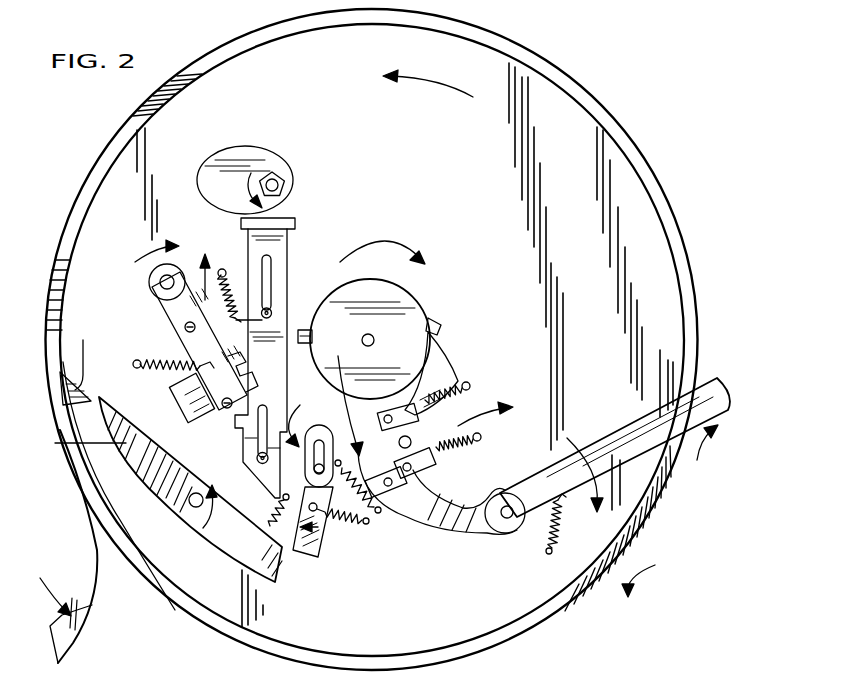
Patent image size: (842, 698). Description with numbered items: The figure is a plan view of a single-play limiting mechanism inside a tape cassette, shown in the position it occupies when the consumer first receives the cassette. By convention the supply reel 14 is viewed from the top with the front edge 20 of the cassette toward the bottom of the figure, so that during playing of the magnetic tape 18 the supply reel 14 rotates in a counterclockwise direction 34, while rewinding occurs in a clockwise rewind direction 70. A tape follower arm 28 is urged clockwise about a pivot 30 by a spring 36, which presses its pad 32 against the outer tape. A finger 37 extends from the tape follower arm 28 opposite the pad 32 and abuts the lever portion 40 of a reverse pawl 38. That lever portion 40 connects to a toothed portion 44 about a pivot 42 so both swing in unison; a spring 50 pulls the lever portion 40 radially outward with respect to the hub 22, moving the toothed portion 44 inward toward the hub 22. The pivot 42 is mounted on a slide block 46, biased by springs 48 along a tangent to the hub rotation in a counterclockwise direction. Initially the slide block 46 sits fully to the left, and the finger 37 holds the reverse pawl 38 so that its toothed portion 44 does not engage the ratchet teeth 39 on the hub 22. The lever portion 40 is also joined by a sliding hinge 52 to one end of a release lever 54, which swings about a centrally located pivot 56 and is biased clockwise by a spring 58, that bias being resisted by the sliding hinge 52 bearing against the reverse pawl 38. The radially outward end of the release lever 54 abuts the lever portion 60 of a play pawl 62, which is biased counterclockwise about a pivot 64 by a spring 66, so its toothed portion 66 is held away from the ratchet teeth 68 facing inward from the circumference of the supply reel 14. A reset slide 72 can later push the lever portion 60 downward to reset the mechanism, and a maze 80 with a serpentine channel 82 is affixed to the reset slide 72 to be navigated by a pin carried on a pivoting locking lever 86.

The supply reel 14 is at (568, 78).
The magnetic tape 18 is at (96, 512).
The front edge 20 is at (647, 576).
The hub 22 is at (418, 278).
The tape follower arm 28 is at (620, 440).
The pivot 30 is at (510, 528).
The pad 32 is at (700, 456).
The counterclockwise direction 34 is at (425, 93).
The spring 36 is at (562, 522).
The finger 37 is at (445, 538).
The reverse pawl 38 is at (395, 456).
The ratchet teeth 39 is at (300, 328).
The lever portion 40 is at (343, 395).
The pivot 42 is at (388, 424).
The toothed portion 44 is at (485, 395).
The slide block 46 is at (425, 405).
The springs 48 is at (468, 384).
The spring 50 is at (385, 498).
The sliding hinge 52 is at (309, 435).
The release lever 54 is at (316, 558).
The pivot 56 is at (334, 518).
The spring 58 is at (372, 522).
The lever portion 60 is at (277, 576).
The play pawl 62 is at (246, 542).
The pivot 64 is at (191, 507).
The toothed portion 66 is at (280, 500).
The ratchet teeth 68 is at (76, 362).
The clockwise rewind direction 70 is at (358, 250).
The reset slide 72 is at (273, 247).
The maze 80 is at (172, 340).
The serpentine channel 82 is at (190, 405).
The locking lever 86 is at (158, 298).